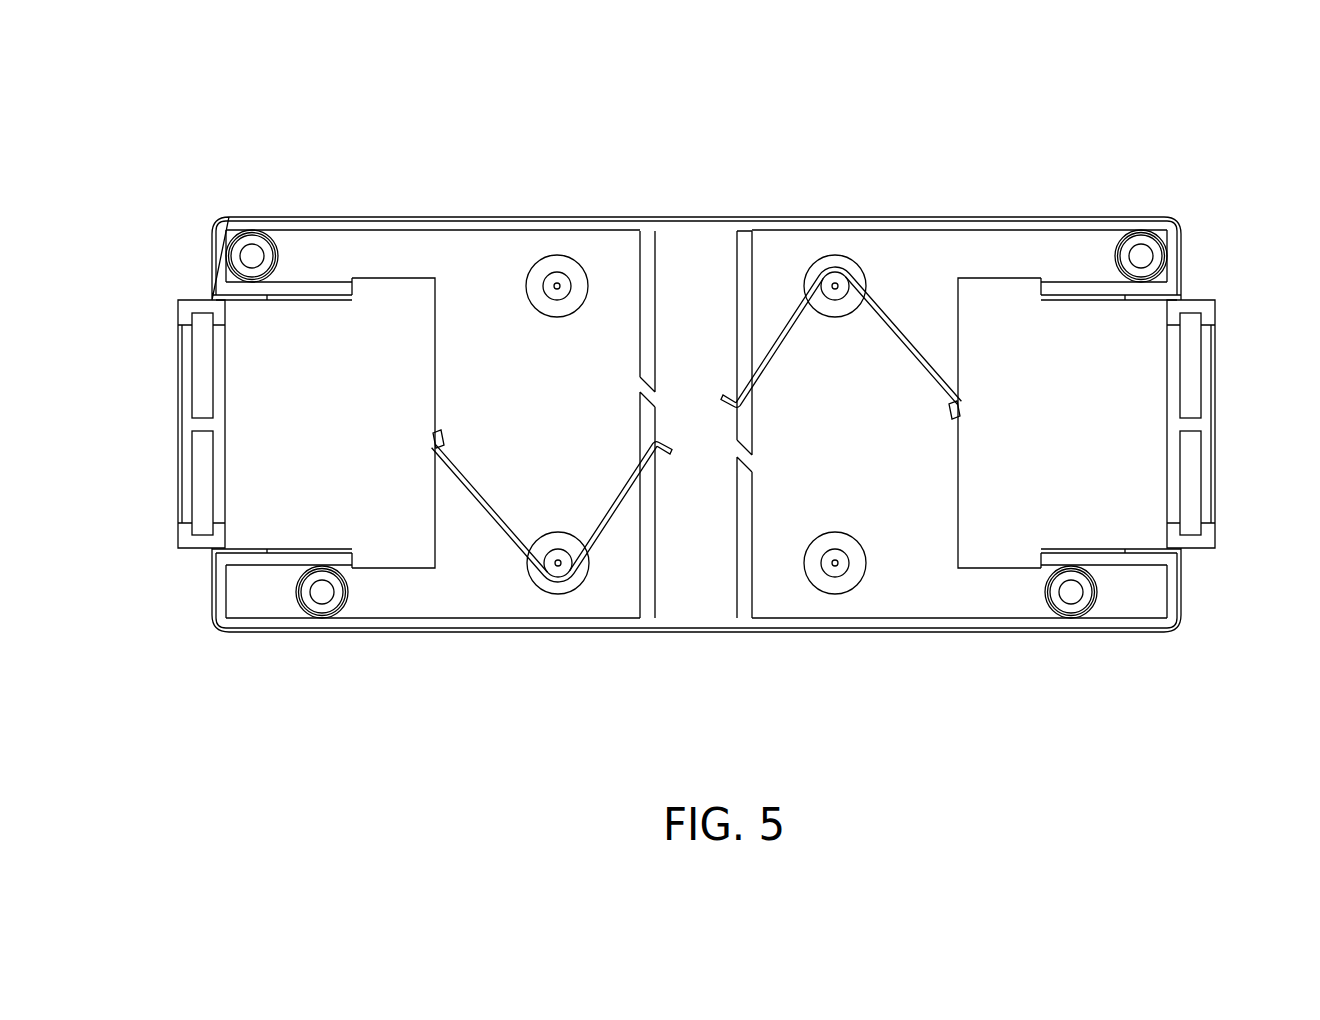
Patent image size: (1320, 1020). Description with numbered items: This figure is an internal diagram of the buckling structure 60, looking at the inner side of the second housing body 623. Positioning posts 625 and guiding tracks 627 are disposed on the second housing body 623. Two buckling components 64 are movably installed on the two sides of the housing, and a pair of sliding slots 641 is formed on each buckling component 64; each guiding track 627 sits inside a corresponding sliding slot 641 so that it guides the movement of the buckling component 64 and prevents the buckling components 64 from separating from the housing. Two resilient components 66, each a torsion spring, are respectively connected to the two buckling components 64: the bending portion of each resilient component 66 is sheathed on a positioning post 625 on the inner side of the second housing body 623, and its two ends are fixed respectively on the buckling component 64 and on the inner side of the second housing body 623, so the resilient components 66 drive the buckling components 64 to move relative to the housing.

The buckling structure 60 is at (1182, 88).
The second housing body 623 is at (541, 240).
The positioning post 625 is at (838, 273).
The guiding track 627 is at (314, 290).
The buckling component 64 is at (148, 492).
The sliding slot 641 is at (197, 284).
The resilient component 66 is at (889, 318).